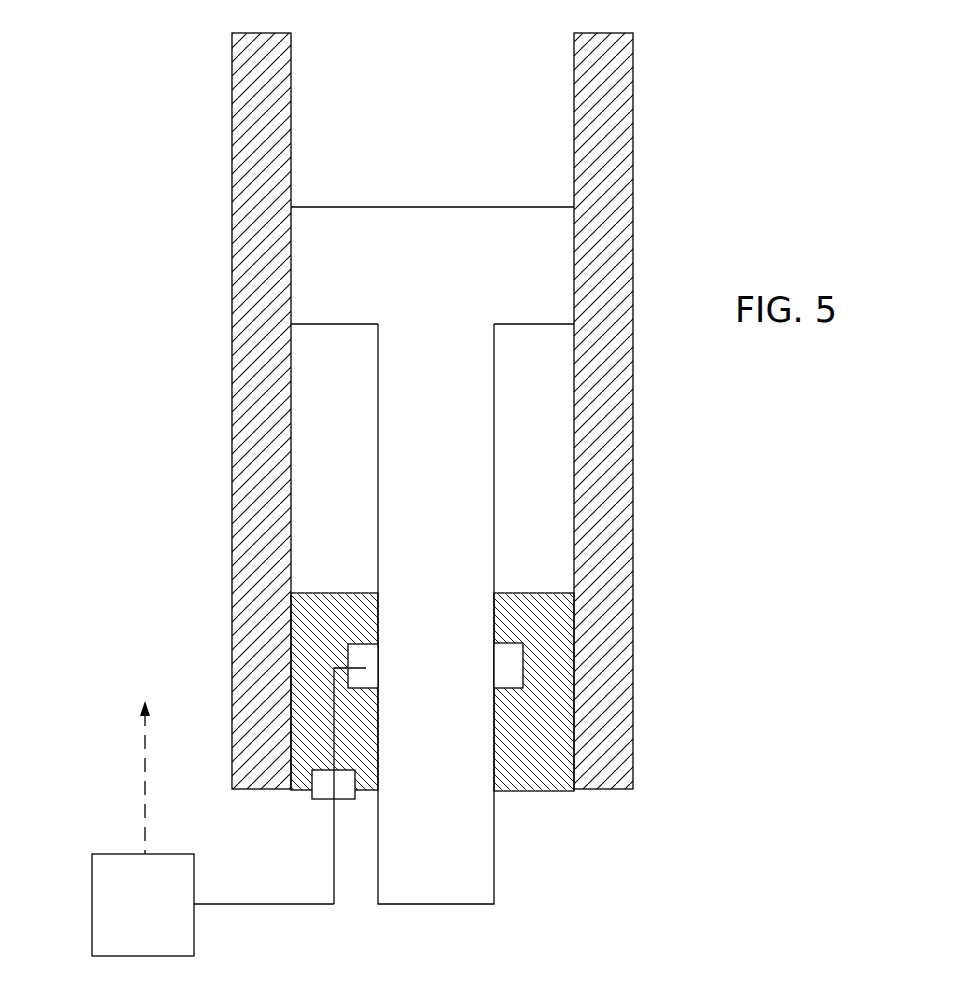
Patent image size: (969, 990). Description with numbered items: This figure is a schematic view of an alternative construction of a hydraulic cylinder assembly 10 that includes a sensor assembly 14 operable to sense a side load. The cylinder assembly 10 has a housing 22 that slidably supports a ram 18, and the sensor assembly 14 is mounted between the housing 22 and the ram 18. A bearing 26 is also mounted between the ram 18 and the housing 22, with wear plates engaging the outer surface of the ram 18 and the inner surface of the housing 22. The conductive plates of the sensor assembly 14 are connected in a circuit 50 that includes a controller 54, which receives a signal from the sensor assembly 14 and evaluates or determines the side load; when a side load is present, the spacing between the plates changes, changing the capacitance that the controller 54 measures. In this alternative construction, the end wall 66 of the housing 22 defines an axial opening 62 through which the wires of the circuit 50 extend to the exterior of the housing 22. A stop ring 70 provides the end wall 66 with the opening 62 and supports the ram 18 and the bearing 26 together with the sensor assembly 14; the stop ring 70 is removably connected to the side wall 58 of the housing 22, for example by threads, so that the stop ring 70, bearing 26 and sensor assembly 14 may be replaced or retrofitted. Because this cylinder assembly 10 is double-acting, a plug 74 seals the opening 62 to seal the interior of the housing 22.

The hydraulic cylinder assembly 10 is at (106, 388).
The sensor assembly 14 is at (372, 678).
The ram 18 is at (408, 287).
The housing 22 is at (232, 178).
The bearing 26 is at (508, 670).
The circuit 50 is at (126, 798).
The controller 54 is at (132, 916).
The side wall 58 is at (634, 616).
The opening 62 is at (300, 795).
The end wall 66 is at (575, 793).
The stop ring 70 is at (532, 793).
The plug 74 is at (355, 797).